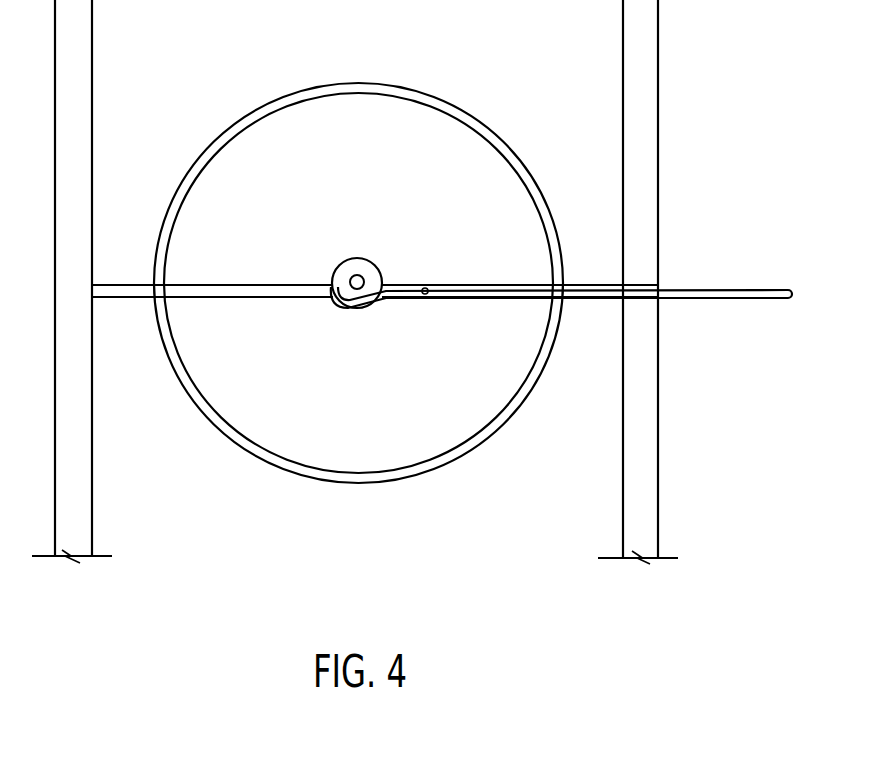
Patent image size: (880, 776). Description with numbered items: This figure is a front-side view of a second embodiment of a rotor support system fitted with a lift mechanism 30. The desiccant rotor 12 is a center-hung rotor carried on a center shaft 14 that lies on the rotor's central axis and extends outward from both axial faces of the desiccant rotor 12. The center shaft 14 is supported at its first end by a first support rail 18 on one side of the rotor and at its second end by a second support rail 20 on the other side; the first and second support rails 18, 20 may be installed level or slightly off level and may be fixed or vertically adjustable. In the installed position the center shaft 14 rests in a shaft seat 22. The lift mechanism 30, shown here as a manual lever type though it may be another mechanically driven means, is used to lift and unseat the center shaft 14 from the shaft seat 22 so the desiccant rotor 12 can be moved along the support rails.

The desiccant rotor 12 is at (475, 118).
The center shaft 14 is at (357, 276).
The first support rail 18 is at (232, 285).
The second support rail 20 is at (375, 265).
The shaft seat 22 is at (364, 276).
The lift mechanism 30 is at (672, 287).